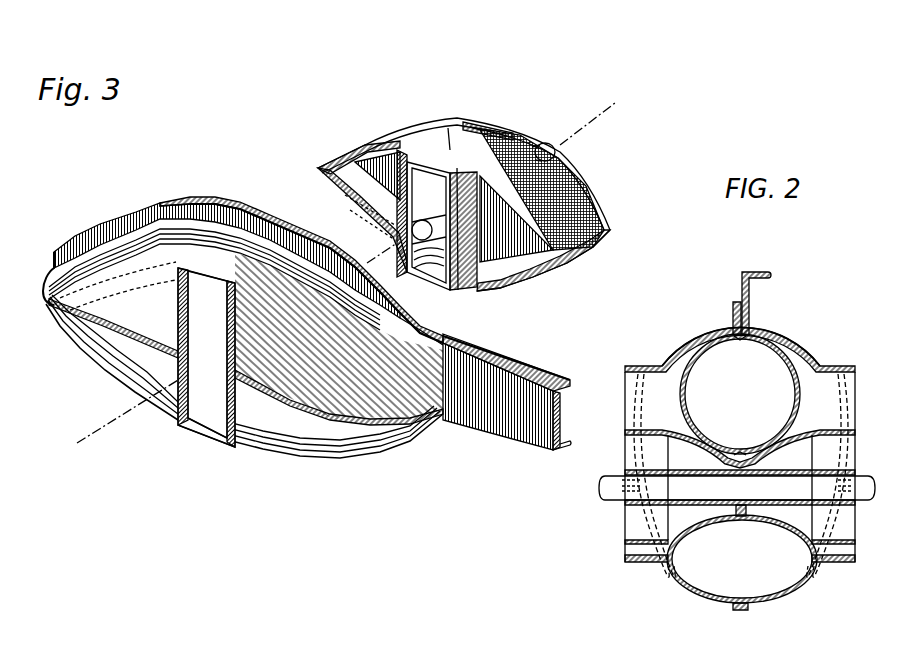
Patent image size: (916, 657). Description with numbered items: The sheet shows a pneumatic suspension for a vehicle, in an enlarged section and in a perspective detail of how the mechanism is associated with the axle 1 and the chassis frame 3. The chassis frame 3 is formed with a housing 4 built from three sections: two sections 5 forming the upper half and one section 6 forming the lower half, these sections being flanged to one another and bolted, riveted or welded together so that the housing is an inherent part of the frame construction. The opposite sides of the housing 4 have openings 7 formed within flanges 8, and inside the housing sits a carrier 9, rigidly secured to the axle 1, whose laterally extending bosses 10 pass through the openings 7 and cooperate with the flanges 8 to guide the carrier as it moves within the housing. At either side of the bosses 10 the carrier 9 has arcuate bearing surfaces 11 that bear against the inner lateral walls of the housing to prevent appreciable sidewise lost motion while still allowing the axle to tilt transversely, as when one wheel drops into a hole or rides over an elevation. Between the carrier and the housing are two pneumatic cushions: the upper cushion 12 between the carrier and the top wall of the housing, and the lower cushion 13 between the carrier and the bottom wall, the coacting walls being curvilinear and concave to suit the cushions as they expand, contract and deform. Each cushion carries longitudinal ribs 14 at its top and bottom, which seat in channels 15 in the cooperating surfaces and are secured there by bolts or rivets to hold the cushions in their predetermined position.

In FIG. 3, the axle 1 is at (547, 150).
In FIG. 2, the axle 1 is at (612, 492).
In FIG. 3, the chassis frame 3 is at (500, 432).
In FIG. 3, the housing 4 is at (325, 456).
In FIG. 2, the housing 4 is at (768, 334).
In FIG. 3, the upper housing sections 5 is at (126, 248).
In FIG. 2, the upper housing sections 5 is at (688, 340).
In FIG. 3, the lower housing section 6 is at (100, 348).
In FIG. 2, the lower housing section 6 is at (675, 578).
In FIG. 3, the openings 7 is at (206, 357).
In FIG. 2, the openings 7 is at (848, 405).
In FIG. 3, the flanges 8 is at (205, 432).
In FIG. 2, the flanges 8 is at (858, 371).
In FIG. 3, the carrier 9 is at (583, 208).
In FIG. 3, the bosses 10 is at (500, 128).
In FIG. 2, the bosses 10 is at (858, 548).
In FIG. 3, the arcuate bearing surfaces 11 is at (390, 214).
In FIG. 2, the arcuate bearing surfaces 11 is at (838, 456).
In FIG. 2, the upper cushion 12 is at (796, 365).
In FIG. 2, the lower cushion 13 is at (706, 588).
In FIG. 2, the ribs 14 is at (727, 335).
In FIG. 3, the channels 15 is at (447, 149).